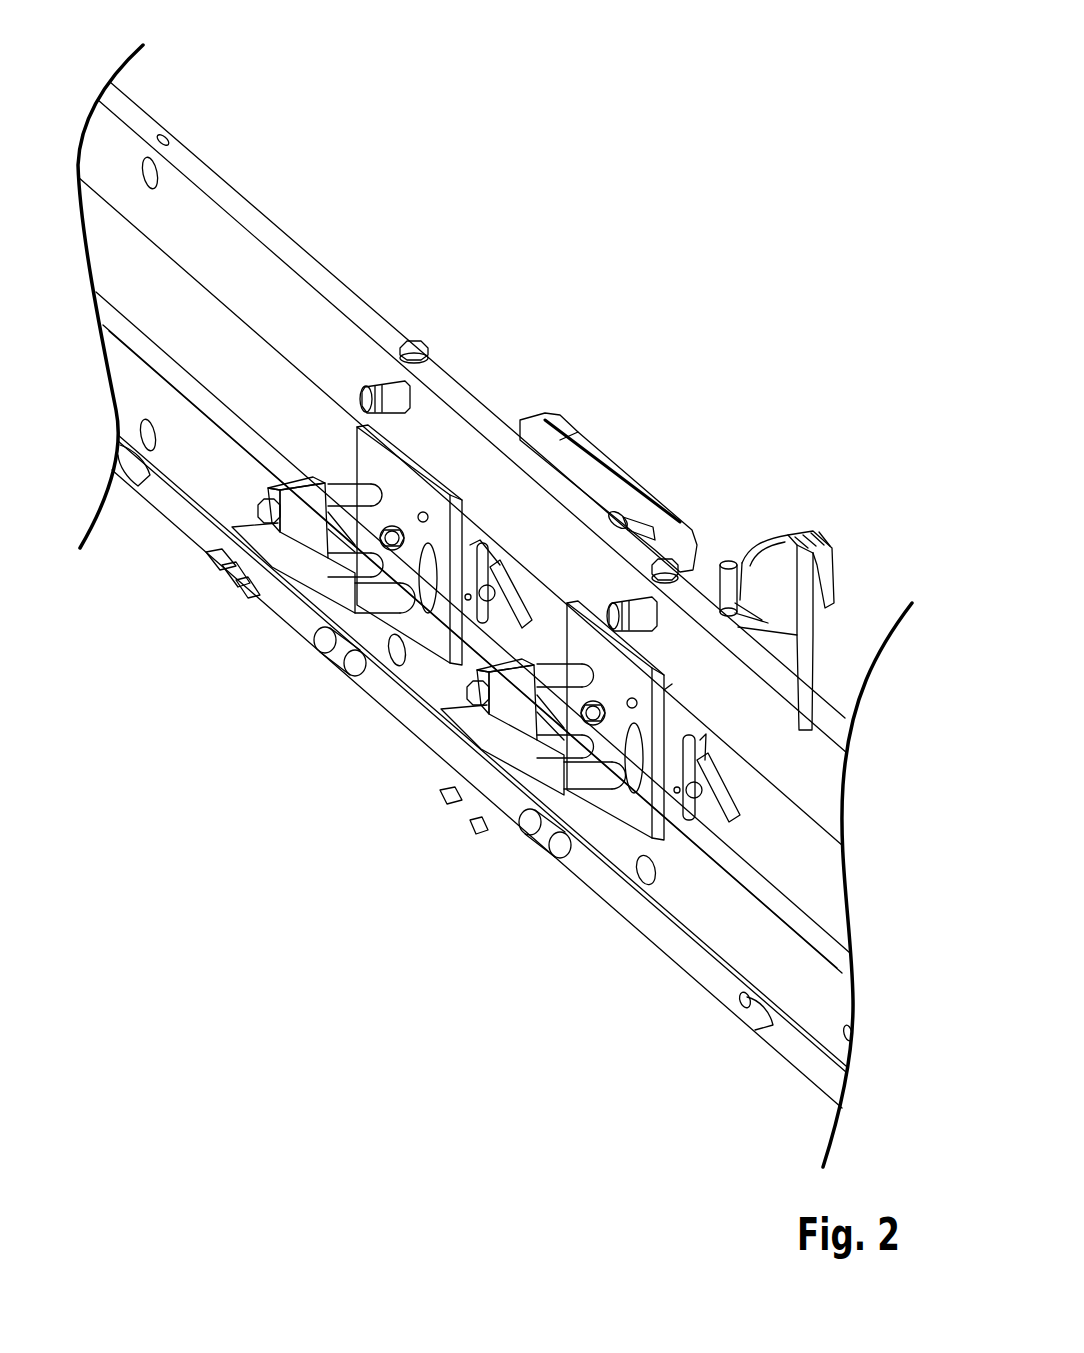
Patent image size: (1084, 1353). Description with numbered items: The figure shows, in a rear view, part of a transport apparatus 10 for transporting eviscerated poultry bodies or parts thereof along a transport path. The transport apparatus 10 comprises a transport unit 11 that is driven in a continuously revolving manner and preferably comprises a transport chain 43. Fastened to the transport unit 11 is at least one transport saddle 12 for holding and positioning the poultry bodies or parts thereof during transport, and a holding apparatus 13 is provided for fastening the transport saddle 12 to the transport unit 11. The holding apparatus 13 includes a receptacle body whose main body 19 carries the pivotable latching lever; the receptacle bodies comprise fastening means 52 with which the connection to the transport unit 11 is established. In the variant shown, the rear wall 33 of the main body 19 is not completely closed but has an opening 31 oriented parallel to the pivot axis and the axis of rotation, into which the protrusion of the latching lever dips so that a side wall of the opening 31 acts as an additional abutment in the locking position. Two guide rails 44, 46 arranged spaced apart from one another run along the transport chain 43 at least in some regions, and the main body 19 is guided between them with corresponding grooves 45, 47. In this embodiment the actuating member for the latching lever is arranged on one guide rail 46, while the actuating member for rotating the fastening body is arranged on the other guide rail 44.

The transport apparatus 10 is at (752, 312).
The transport unit 11 is at (702, 997).
The transport saddle 12 is at (632, 462).
The holding apparatus 13 is at (748, 826).
The main body 19 is at (377, 455).
The opening 31 is at (430, 558).
The rear wall 33 is at (413, 503).
The transport chain 43 is at (583, 883).
The guide rail 44 is at (845, 1012).
The groove 45 is at (665, 832).
The guide rail 46 is at (826, 788).
The groove 47 is at (668, 687).
The fastening means 52 is at (290, 573).